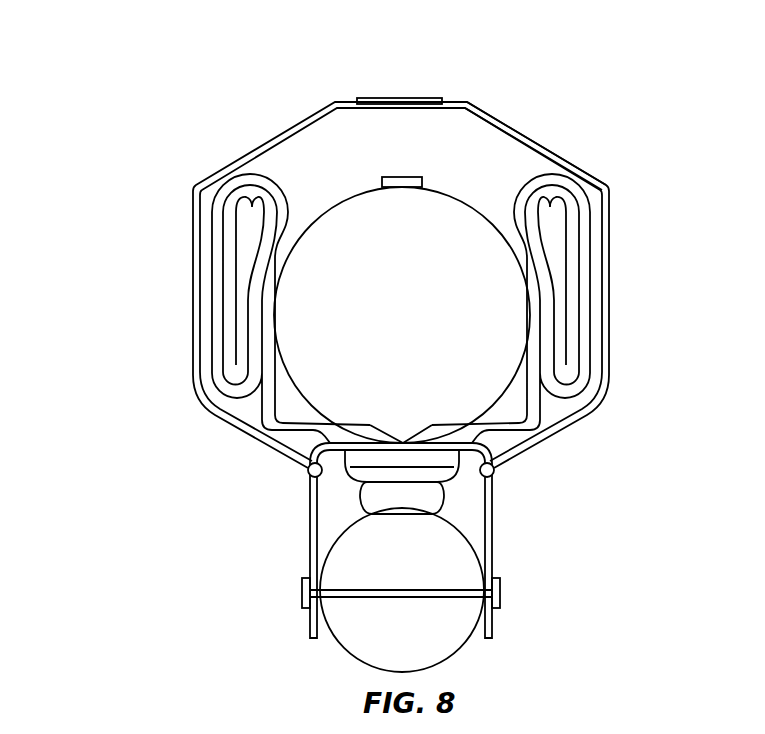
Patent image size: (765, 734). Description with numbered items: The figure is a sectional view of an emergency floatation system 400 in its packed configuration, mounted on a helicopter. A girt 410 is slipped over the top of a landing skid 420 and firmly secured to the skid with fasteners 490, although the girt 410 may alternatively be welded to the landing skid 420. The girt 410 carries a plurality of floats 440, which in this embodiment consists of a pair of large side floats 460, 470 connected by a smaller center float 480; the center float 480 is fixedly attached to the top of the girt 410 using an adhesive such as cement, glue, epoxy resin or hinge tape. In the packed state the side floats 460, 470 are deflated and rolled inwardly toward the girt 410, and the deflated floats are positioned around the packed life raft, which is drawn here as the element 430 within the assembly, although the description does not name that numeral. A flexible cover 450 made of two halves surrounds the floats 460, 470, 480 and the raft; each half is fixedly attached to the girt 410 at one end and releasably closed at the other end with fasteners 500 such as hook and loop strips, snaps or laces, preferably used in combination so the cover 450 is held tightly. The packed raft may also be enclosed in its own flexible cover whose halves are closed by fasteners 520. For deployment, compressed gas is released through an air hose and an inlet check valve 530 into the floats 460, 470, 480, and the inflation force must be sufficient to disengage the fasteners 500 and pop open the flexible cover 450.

The emergency floatation system 400 is at (137, 45).
The girt 410 is at (495, 551).
The landing skid 420 is at (336, 657).
The ball 430 is at (358, 186).
The plurality of floats 440 is at (192, 328).
The flexible cover 450 is at (514, 127).
The side float 460 is at (248, 201).
The side float 470 is at (558, 192).
The center float 480 is at (403, 441).
The fasteners 490 is at (282, 592).
The fasteners 500 is at (378, 97).
The fasteners 520 is at (410, 175).
The inlet check valve 530 is at (345, 487).